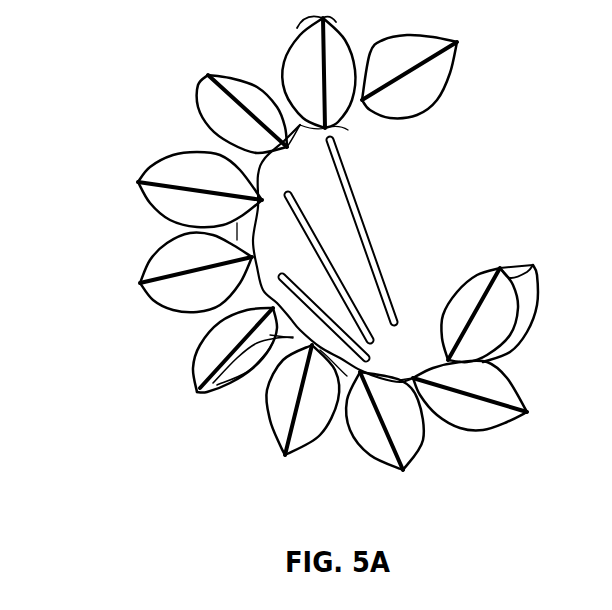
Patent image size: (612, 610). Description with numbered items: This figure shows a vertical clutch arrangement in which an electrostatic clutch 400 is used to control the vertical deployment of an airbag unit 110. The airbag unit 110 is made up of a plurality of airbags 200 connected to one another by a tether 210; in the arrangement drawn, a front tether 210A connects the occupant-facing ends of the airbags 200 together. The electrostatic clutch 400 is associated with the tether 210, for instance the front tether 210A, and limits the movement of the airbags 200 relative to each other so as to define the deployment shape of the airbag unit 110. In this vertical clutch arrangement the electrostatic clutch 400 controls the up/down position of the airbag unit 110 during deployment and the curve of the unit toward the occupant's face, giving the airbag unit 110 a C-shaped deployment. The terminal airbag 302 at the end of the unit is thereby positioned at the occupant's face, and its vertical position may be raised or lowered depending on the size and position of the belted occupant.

The airbag unit 110 is at (293, 40).
The terminal airbag 302 is at (412, 98).
The airbags 200 is at (181, 163).
The tether 210 is at (166, 362).
The front tether 210A is at (215, 387).
The electrostatic clutch 400 is at (399, 227).